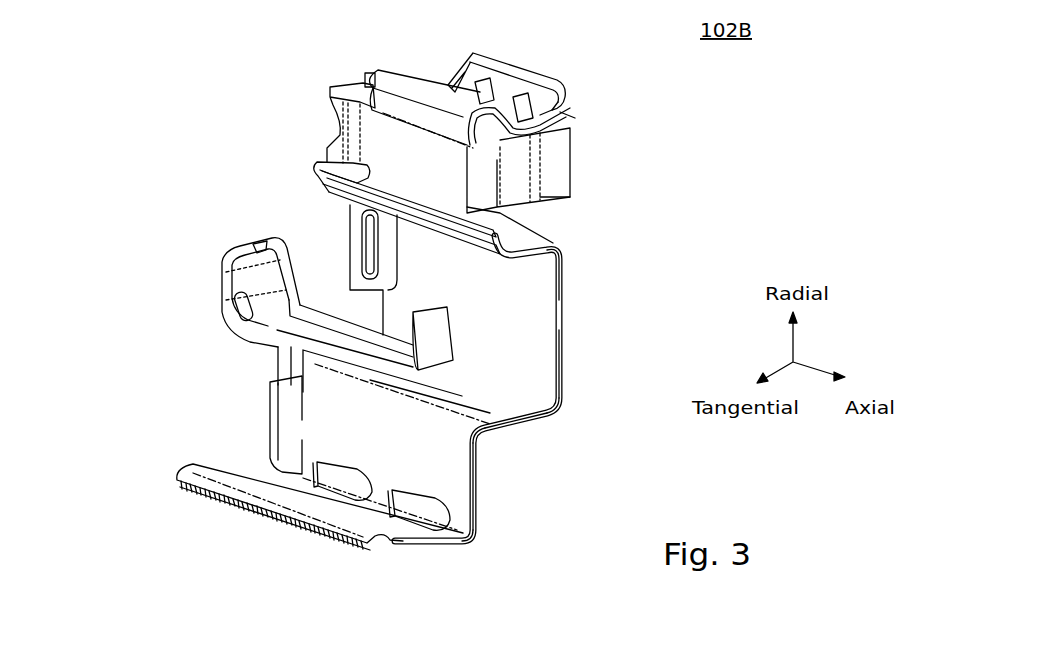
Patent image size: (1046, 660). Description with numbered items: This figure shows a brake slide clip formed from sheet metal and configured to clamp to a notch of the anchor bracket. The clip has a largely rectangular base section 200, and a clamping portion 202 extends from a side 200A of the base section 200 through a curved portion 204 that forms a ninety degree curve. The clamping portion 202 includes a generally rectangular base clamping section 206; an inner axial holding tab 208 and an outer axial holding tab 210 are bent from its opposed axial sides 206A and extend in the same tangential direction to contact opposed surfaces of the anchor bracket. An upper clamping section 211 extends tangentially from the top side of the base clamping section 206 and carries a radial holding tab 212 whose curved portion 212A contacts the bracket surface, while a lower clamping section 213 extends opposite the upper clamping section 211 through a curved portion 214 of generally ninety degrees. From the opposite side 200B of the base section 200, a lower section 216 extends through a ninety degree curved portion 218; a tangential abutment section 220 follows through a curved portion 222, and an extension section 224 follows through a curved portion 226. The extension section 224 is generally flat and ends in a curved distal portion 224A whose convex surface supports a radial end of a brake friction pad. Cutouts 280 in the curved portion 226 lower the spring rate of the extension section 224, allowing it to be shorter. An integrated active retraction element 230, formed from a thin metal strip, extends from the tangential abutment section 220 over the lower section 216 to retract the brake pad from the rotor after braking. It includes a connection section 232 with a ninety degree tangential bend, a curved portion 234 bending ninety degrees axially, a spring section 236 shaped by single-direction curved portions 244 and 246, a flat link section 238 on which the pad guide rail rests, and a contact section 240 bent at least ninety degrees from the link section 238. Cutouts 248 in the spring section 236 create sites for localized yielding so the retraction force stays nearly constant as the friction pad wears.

The base section 200 is at (545, 300).
The side of base section 200A is at (567, 247).
The side of base section 200B is at (548, 372).
The clamping portion 202 is at (267, 116).
The curved portion 204 is at (560, 235).
The base clamping section 206 is at (408, 128).
The axial sides of base clamping section 206A is at (340, 98).
The inner axial holding tab 208 is at (563, 180).
The outer axial holding tab 210 is at (335, 98).
The upper clamping section 211 is at (575, 60).
The radial holding tab 212 is at (503, 67).
The curved portion of radial holding tab 212A is at (568, 110).
The lower clamping section 213 is at (520, 260).
The curved portion 214 is at (312, 190).
The lower section 216 is at (543, 410).
The curved portion 218 is at (543, 393).
The tangential abutment section 220 is at (467, 480).
The curved portion 222 is at (480, 430).
The extension section 224 is at (410, 527).
The distal portion 224A is at (370, 530).
The curved portion 226 is at (473, 530).
The active retraction element 230 is at (151, 152).
The connection section 232 is at (267, 423).
The curved portion 234 is at (288, 350).
The spring section 236 is at (192, 277).
The link section 238 is at (396, 388).
The contact section 240 is at (448, 336).
The curved portion 244 is at (230, 252).
The curved portion 246 is at (290, 303).
The cutouts 248 is at (273, 207).
The cutouts 280 is at (403, 512).